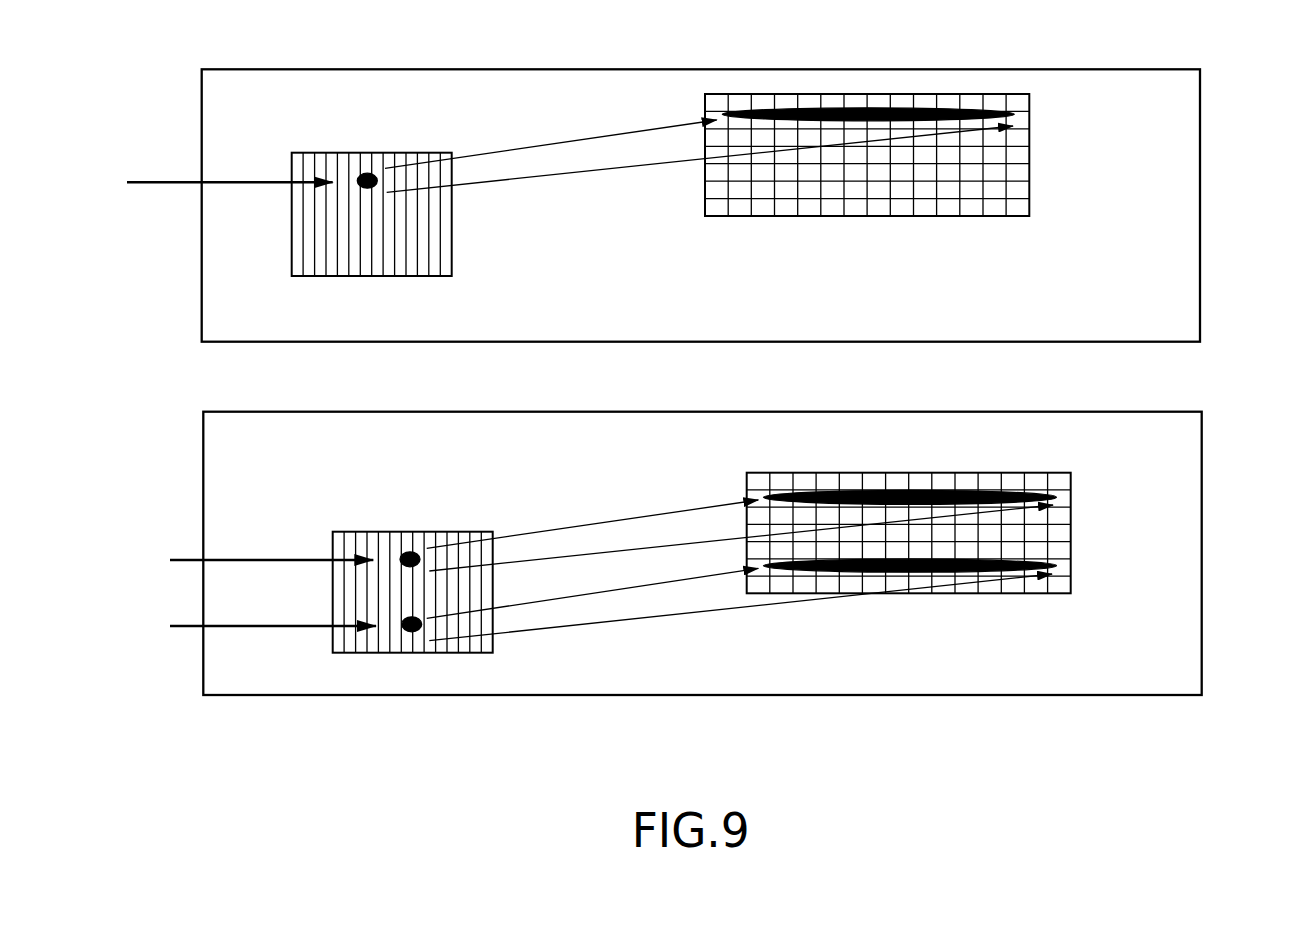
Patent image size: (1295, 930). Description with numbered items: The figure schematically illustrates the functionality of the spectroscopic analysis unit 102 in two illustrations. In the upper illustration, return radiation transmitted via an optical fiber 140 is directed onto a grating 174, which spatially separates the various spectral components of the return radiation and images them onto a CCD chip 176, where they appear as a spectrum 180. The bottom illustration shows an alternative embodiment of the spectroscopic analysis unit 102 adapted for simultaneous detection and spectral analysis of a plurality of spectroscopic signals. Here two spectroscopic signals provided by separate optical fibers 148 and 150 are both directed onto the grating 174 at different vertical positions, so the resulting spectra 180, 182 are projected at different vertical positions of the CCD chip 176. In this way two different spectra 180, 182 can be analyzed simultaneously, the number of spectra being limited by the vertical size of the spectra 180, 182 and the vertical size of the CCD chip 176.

The spectroscopic analysis unit 102 is at (1202, 202).
The optical fiber 140 is at (160, 178).
The optical fiber 148 is at (275, 557).
The optical fiber 150 is at (263, 629).
The grating 174 is at (418, 152).
The CCD chip 176 is at (952, 218).
The spectrum 180 is at (908, 92).
The spectrum 182 is at (993, 577).